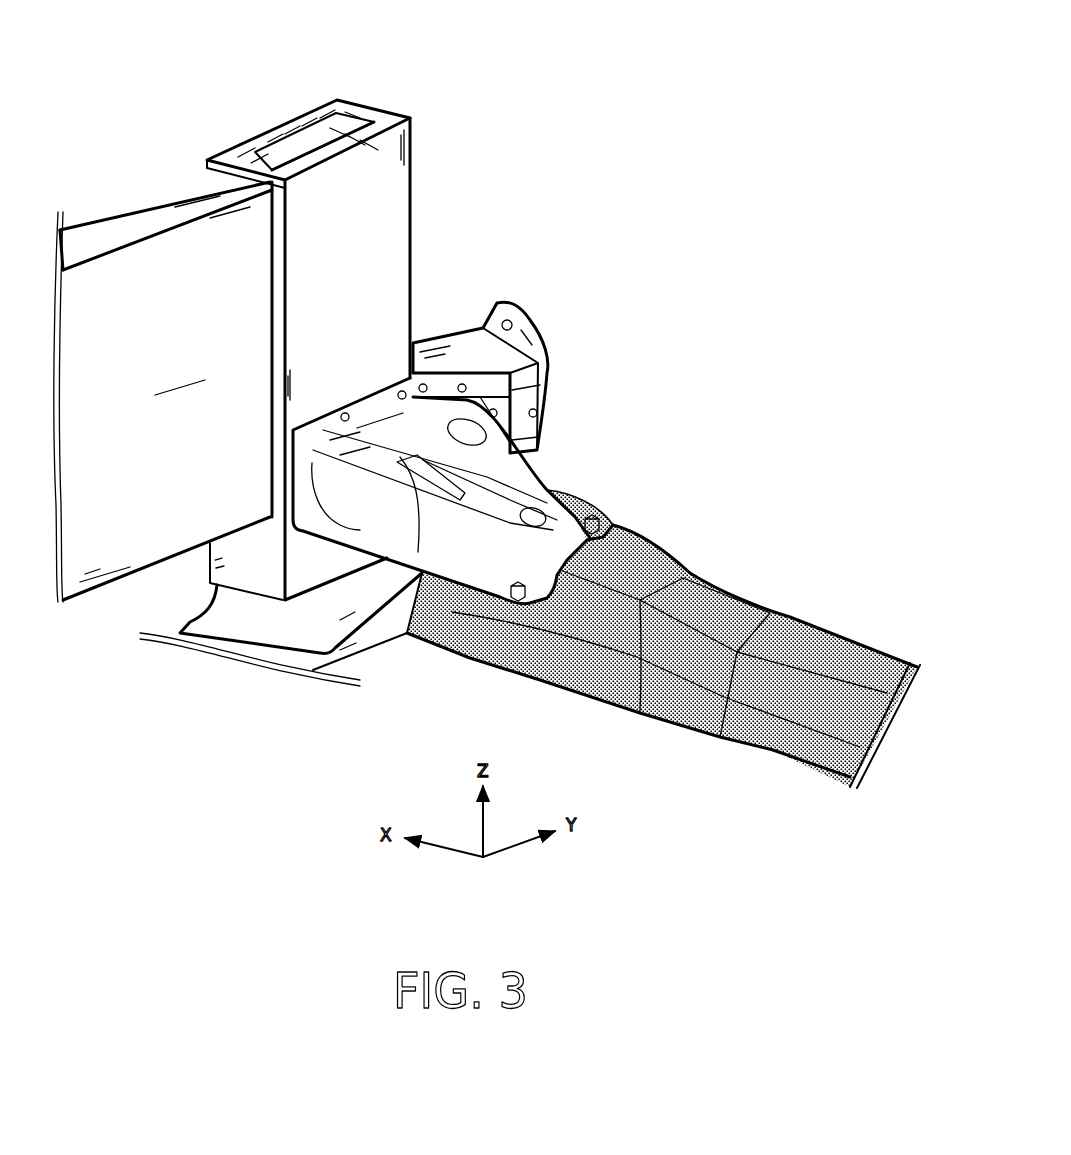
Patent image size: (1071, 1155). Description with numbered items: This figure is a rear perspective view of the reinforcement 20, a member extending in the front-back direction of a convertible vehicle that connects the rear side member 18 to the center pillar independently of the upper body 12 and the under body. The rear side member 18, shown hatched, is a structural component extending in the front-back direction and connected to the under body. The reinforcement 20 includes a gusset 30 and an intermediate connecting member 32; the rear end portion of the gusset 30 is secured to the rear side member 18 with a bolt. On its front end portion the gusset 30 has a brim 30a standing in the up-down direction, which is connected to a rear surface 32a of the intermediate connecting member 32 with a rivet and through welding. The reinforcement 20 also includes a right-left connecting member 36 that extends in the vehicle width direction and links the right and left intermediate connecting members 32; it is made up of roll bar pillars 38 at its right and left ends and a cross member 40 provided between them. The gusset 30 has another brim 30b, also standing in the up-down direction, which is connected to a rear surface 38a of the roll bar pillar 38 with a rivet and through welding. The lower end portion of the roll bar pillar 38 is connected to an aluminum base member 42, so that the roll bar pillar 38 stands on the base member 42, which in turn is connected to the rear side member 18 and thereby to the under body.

The upper body 12 is at (704, 317).
The rear side member 18 is at (743, 633).
The reinforcement 20 is at (562, 268).
The gusset 30 is at (477, 552).
The brim 30a is at (540, 420).
The brim 30b is at (410, 636).
The intermediate connecting member 32 is at (469, 343).
The rear surface 32a is at (527, 390).
The right-left connecting member 36 is at (253, 38).
The roll bar pillar 38 is at (257, 140).
The rear surface 38a is at (363, 207).
The cross member 40 is at (157, 207).
The base member 42 is at (285, 622).